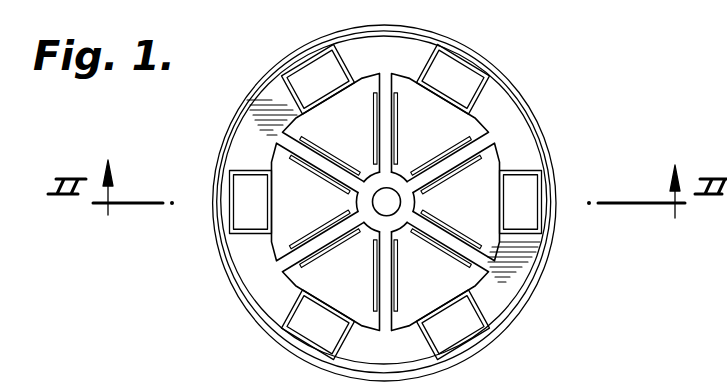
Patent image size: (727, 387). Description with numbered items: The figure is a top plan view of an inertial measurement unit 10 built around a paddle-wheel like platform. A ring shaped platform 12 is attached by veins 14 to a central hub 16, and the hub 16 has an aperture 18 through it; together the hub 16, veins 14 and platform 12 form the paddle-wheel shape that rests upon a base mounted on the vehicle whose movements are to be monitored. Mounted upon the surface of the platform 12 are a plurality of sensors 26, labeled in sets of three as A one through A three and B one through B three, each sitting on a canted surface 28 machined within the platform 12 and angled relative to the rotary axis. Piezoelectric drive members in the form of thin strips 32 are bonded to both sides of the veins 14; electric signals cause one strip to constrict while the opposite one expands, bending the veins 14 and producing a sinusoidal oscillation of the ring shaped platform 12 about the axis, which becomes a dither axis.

The inertial measurement unit 10 is at (544, 98).
The ring shaped platform 12 is at (243, 146).
The veins 14 is at (392, 110).
The hub 16 is at (362, 206).
The aperture 18 is at (392, 196).
The sensors 26 is at (296, 82).
The canted surfaces 28 is at (333, 107).
The piezoelectric drive members 32 is at (365, 255).